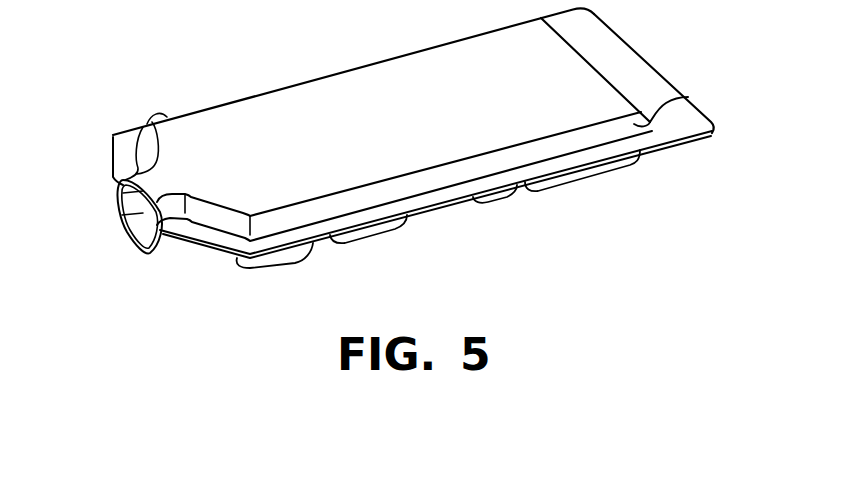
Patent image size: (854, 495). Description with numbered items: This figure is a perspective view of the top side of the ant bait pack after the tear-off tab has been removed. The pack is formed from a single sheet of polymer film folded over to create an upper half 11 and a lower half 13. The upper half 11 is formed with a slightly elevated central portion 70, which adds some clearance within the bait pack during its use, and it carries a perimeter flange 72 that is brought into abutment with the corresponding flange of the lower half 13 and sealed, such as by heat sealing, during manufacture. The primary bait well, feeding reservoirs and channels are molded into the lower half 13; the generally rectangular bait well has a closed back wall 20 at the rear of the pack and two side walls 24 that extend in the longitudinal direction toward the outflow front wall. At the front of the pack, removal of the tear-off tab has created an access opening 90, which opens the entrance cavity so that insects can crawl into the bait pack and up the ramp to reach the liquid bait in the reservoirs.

The upper half 11 is at (177, 135).
The flange 72 is at (612, 42).
The elevated central portion 70 is at (688, 97).
The closed back wall 20 is at (632, 158).
The side walls 24 is at (500, 178).
The lower half 13 is at (276, 262).
The access opening 90 is at (122, 215).